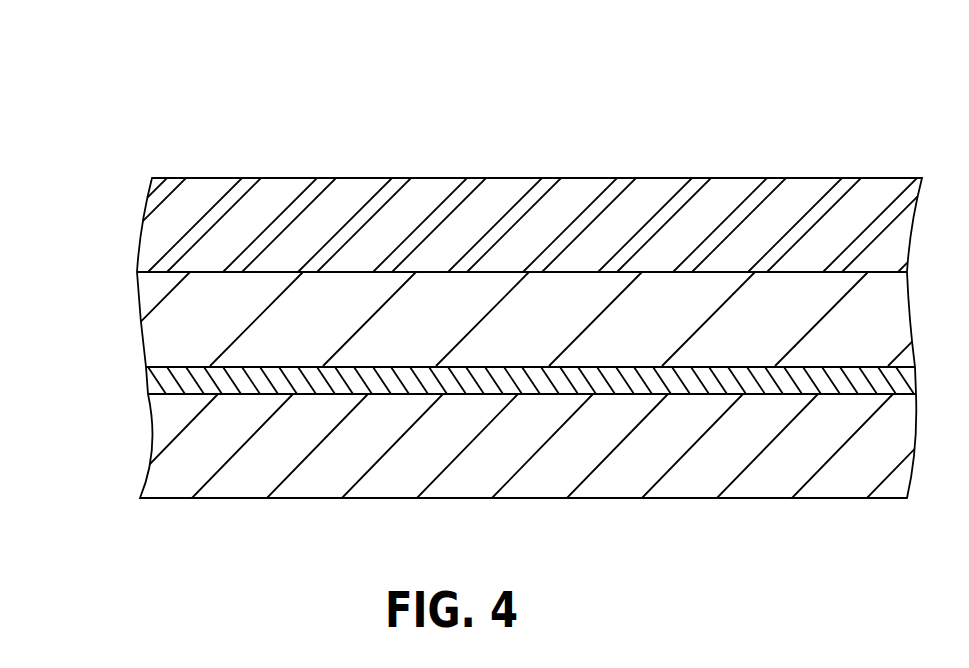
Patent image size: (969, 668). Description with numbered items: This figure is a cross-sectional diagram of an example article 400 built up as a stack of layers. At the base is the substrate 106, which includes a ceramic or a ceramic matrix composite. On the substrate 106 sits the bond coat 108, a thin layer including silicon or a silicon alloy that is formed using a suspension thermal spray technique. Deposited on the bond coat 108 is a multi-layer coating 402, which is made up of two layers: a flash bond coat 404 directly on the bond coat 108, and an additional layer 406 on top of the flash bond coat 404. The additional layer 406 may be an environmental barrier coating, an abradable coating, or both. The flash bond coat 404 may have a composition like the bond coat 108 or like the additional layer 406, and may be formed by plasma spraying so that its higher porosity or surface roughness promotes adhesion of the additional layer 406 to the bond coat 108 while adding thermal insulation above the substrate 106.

The article 400 is at (82, 70).
The multi-layer coating 402 is at (488, 272).
The additional layer 406 is at (174, 236).
The flash bond coat 404 is at (526, 319).
The bond coat 108 is at (188, 384).
The substrate 106 is at (193, 446).